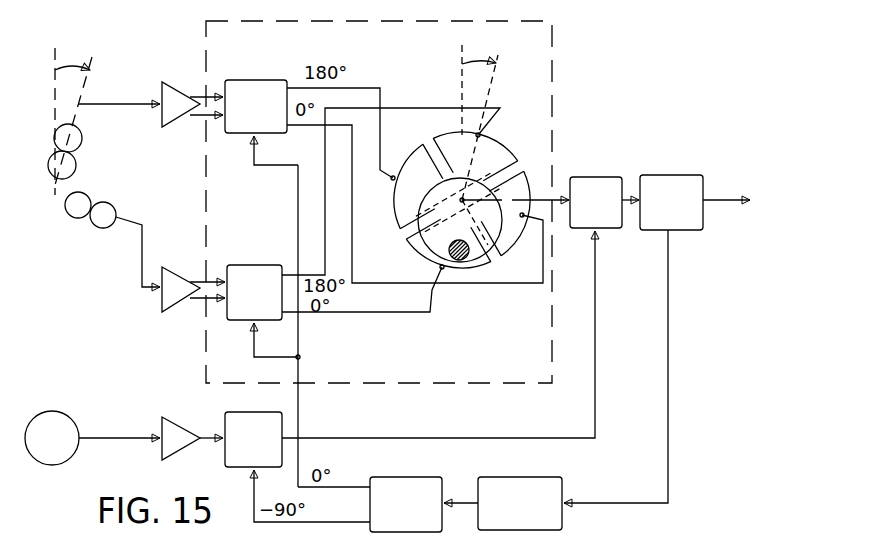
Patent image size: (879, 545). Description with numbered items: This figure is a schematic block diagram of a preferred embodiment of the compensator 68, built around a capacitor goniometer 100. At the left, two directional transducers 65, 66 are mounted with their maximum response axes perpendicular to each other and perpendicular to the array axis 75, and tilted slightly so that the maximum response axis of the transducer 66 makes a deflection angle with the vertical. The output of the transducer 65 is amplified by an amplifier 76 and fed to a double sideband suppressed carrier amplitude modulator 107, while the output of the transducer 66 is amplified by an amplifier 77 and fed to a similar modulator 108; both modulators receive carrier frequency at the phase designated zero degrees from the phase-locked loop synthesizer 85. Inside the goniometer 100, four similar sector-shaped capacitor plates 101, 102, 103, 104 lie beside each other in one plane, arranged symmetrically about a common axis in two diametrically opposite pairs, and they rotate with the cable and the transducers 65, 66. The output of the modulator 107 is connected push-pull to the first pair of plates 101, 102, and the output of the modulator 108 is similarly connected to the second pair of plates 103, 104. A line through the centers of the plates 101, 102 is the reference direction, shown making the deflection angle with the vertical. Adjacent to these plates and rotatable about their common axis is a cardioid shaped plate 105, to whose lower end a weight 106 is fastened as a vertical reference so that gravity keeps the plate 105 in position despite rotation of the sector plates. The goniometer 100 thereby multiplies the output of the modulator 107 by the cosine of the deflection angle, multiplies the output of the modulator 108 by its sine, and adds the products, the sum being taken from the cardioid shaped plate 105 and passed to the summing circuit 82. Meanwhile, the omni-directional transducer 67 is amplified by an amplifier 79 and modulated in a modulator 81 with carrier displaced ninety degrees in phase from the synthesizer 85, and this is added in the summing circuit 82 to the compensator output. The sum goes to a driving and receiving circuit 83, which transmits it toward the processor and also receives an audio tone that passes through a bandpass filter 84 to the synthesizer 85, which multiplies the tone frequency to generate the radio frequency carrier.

The transducer 65 is at (88, 193).
The transducer 66 is at (80, 132).
The omni-directional transducer 67 is at (65, 413).
The compensator 68 is at (549, 79).
The array axis 75 is at (62, 198).
The amplifier 76 is at (165, 254).
The amplifier 77 is at (165, 68).
The amplifier 79 is at (192, 412).
The modulator 81 is at (260, 412).
The summing circuit 82 is at (594, 177).
The driving and receiving circuit 83 is at (664, 175).
The bandpass filter 84 is at (530, 477).
The phase-locked loop synthesizer 85 is at (400, 477).
The goniometer 100 is at (444, 129).
The capacitor plate 101 is at (497, 142).
The capacitor plate 102 is at (414, 262).
The capacitor plate 103 is at (405, 160).
The capacitor plate 104 is at (514, 236).
The cardioid shaped plate 105 is at (404, 232).
The weight 106 is at (473, 257).
The double sideband suppressed carrier amplitude modulator 107 is at (253, 251).
The modulator 108 is at (250, 80).